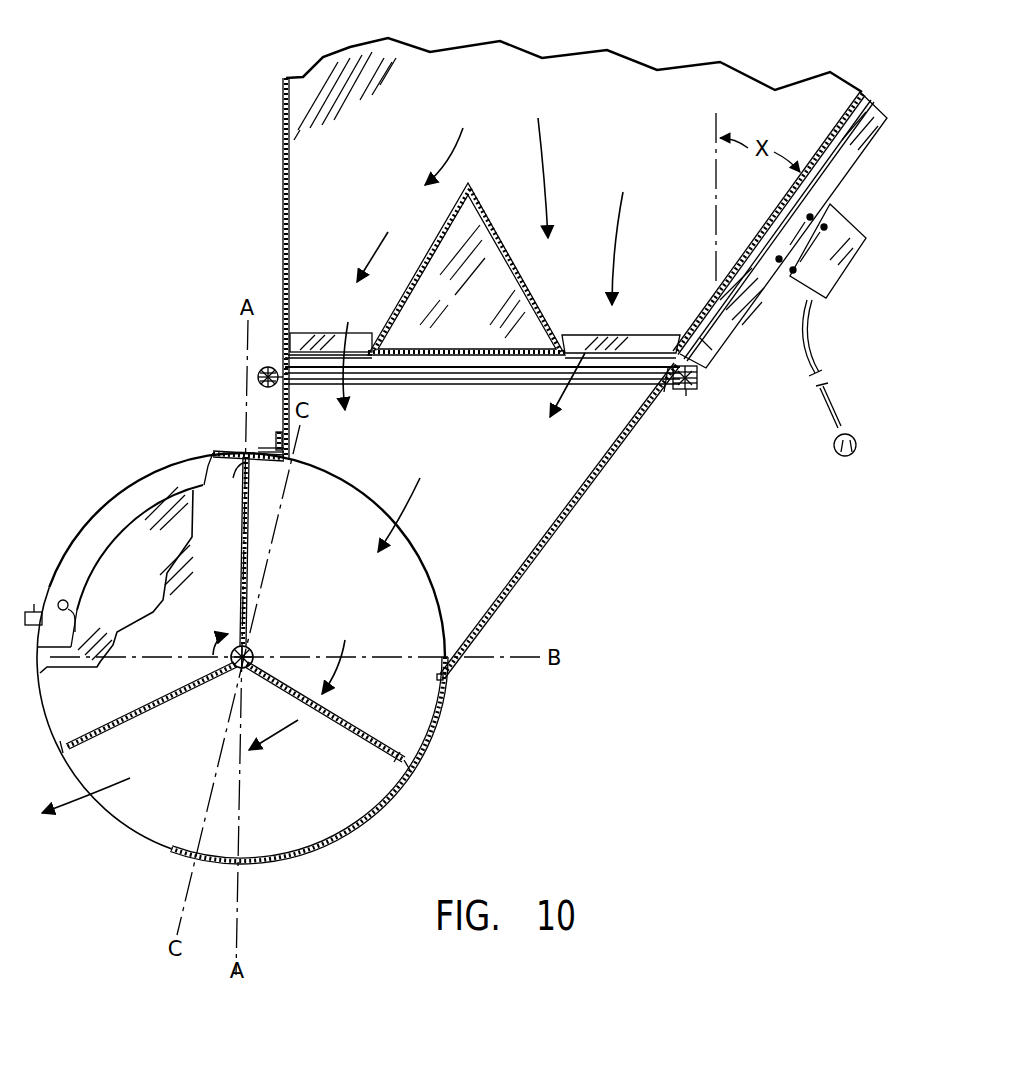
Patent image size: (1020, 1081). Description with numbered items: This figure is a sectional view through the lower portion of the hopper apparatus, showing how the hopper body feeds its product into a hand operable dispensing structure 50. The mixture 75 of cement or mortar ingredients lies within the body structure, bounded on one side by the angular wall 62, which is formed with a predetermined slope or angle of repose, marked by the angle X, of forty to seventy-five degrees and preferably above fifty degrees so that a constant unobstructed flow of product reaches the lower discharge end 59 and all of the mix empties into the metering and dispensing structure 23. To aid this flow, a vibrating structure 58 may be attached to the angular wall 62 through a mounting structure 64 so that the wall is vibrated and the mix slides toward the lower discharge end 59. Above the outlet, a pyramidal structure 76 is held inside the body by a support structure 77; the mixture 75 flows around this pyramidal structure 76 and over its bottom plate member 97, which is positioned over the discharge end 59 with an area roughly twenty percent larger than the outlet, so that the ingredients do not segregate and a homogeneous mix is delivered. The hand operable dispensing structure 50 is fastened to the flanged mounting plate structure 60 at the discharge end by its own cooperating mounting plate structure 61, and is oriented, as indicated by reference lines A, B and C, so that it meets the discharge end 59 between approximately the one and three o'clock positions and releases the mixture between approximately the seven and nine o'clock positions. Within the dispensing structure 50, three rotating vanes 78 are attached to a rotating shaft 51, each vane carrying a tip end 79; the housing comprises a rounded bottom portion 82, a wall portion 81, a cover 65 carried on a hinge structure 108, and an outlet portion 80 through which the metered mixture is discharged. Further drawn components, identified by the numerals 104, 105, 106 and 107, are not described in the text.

The metering and dispensing structure 23 is at (420, 766).
The hand operable dispensing structure 50 is at (196, 450).
The rotating shaft 51 is at (252, 648).
The vibrating structure 58 is at (825, 300).
The lower discharge end 59 is at (322, 355).
The flanged mounting plate structure 60 is at (698, 383).
The cooperating mounting plate structure 61 is at (668, 392).
The angular wall 62 is at (825, 150).
The mounting structure 64 is at (752, 320).
The cover 65 is at (82, 534).
The mixture 75 is at (622, 192).
The pyramidal structure 76 is at (538, 290).
The support structure 77 is at (638, 334).
The rotating vane 78 is at (250, 532).
The tip end 79 is at (233, 478).
The outlet portion 80 is at (118, 840).
The wall portion 81 is at (535, 560).
The rounded bottom portion 82 is at (448, 705).
The bottom plate member 97 is at (455, 386).
The bolt 104 is at (262, 388).
The nut 105 is at (690, 392).
The side wall 106 is at (283, 205).
The liner 107 is at (290, 185).
The hinge structure 108 is at (276, 438).